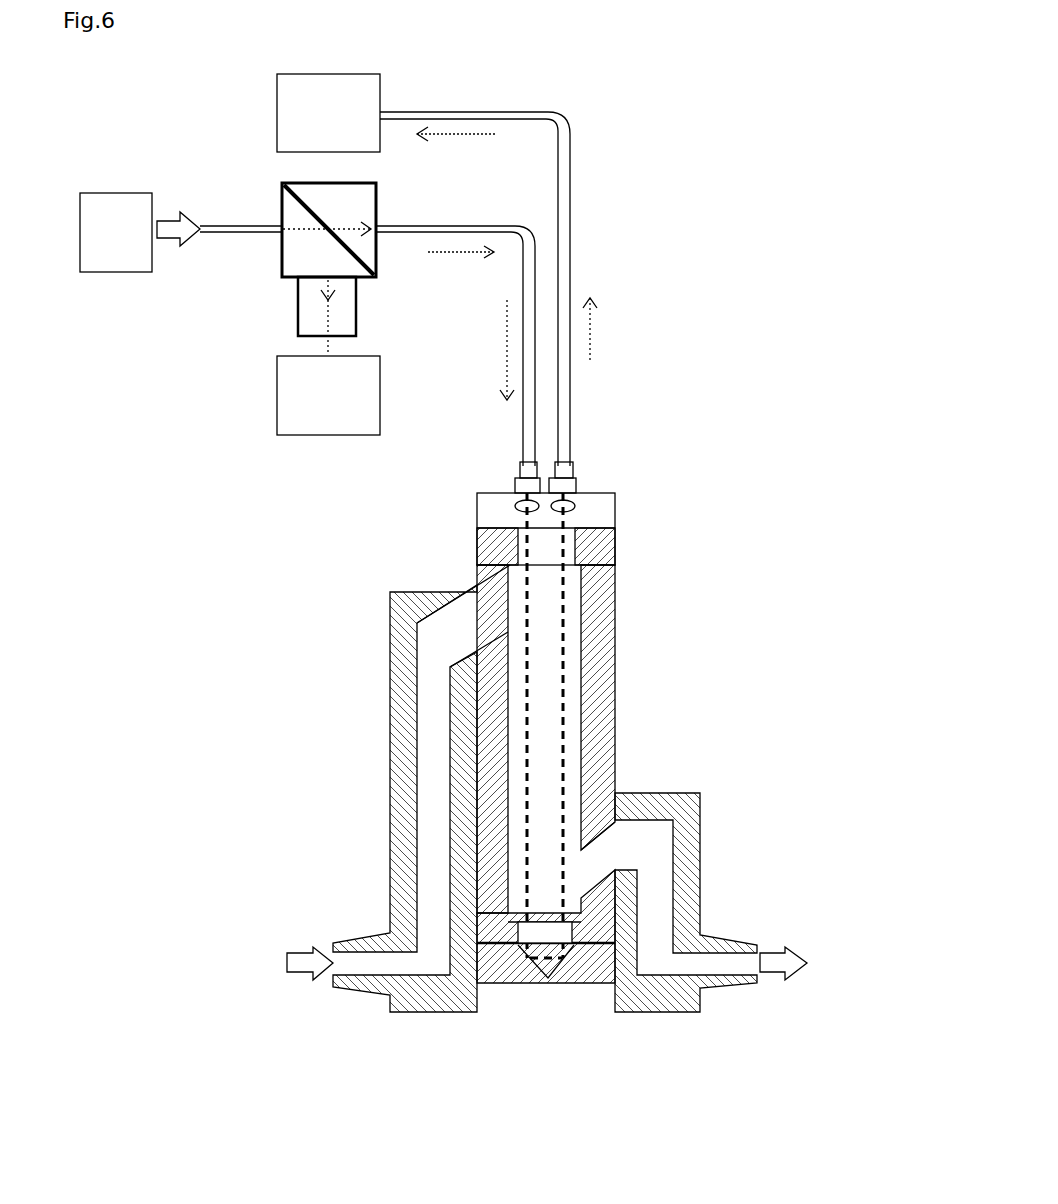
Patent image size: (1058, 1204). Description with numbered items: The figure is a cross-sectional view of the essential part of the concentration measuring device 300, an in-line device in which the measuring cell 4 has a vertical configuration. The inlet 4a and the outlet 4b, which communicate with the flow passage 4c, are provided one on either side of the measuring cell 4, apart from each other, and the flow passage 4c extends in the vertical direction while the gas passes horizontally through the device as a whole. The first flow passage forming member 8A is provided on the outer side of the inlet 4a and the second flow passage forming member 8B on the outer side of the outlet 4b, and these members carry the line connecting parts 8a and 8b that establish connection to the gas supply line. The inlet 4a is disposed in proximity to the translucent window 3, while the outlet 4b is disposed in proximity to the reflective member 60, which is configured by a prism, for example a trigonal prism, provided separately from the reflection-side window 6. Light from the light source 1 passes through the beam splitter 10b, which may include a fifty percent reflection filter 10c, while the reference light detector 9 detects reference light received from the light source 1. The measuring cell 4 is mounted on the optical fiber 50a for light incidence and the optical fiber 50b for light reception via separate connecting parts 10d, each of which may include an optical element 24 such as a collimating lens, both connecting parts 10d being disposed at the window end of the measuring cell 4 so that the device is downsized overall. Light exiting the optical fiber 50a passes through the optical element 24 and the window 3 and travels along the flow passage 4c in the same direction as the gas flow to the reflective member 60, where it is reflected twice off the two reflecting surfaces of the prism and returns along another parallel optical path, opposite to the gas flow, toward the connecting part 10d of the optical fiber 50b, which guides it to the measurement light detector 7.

The light source 1 is at (118, 275).
The translucent window 3 is at (616, 548).
The measuring cell 4 is at (581, 725).
The inlet 4a is at (505, 606).
The outlet 4b is at (580, 868).
The flow passage 4c is at (581, 648).
The reflection-side window 6 is at (543, 966).
The measurement light detector 7 is at (277, 108).
The first flow passage forming member 8A is at (397, 798).
The second flow passage forming member 8B is at (711, 875).
The line connecting part 8a is at (355, 942).
The line connecting part 8b is at (722, 937).
The reference light detector 9 is at (320, 438).
The beam splitter 10b is at (283, 207).
The 50% reflection filter 10c is at (377, 262).
The connecting part 10d is at (516, 482).
The optical element 24 is at (520, 505).
The optical fiber for light incidence 50a is at (522, 415).
The optical fiber for light reception 50b is at (570, 220).
The reflective member 60 is at (548, 977).
The concentration measuring device 300 is at (706, 183).